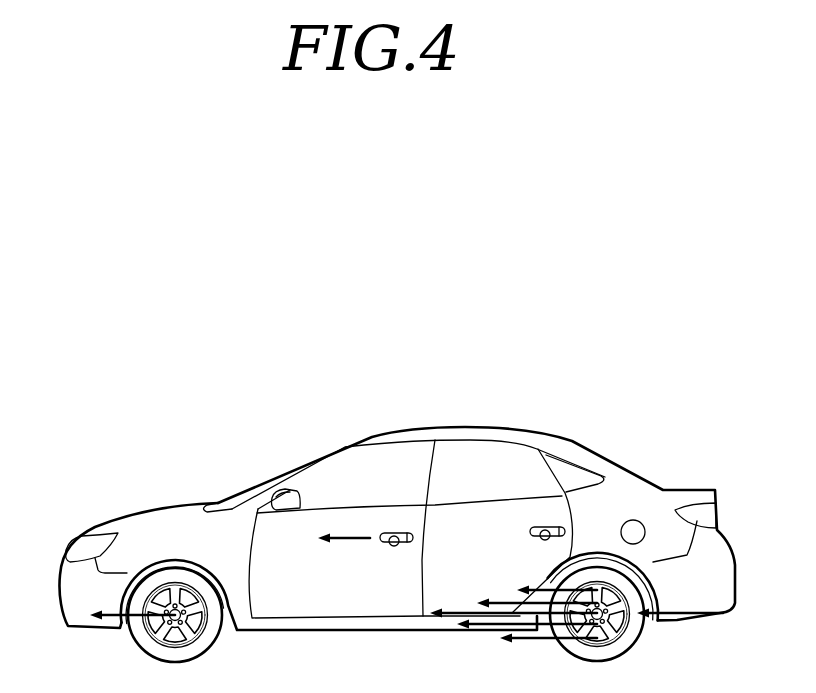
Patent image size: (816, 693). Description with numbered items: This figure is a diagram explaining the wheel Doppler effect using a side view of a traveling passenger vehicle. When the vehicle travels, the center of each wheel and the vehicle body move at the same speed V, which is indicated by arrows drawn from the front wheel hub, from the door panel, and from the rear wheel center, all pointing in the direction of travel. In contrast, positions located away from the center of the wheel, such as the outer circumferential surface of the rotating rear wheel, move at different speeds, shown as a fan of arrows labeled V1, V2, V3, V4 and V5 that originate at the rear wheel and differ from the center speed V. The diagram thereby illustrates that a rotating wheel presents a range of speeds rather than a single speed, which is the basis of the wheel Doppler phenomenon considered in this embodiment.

The speed of vehicle body and wheel center V is at (343, 577).
The first rotational speed of wheel outer circumferential surface V1 is at (553, 578).
The second rotational speed of wheel outer circumferential surface V2 is at (535, 592).
The third rotational speed of wheel outer circumferential surface V3 is at (524, 640).
The fourth rotational speed of wheel outer circumferential surface V4 is at (545, 653).
The fifth rotational speed of wheel outer circumferential surface V5 is at (687, 626).